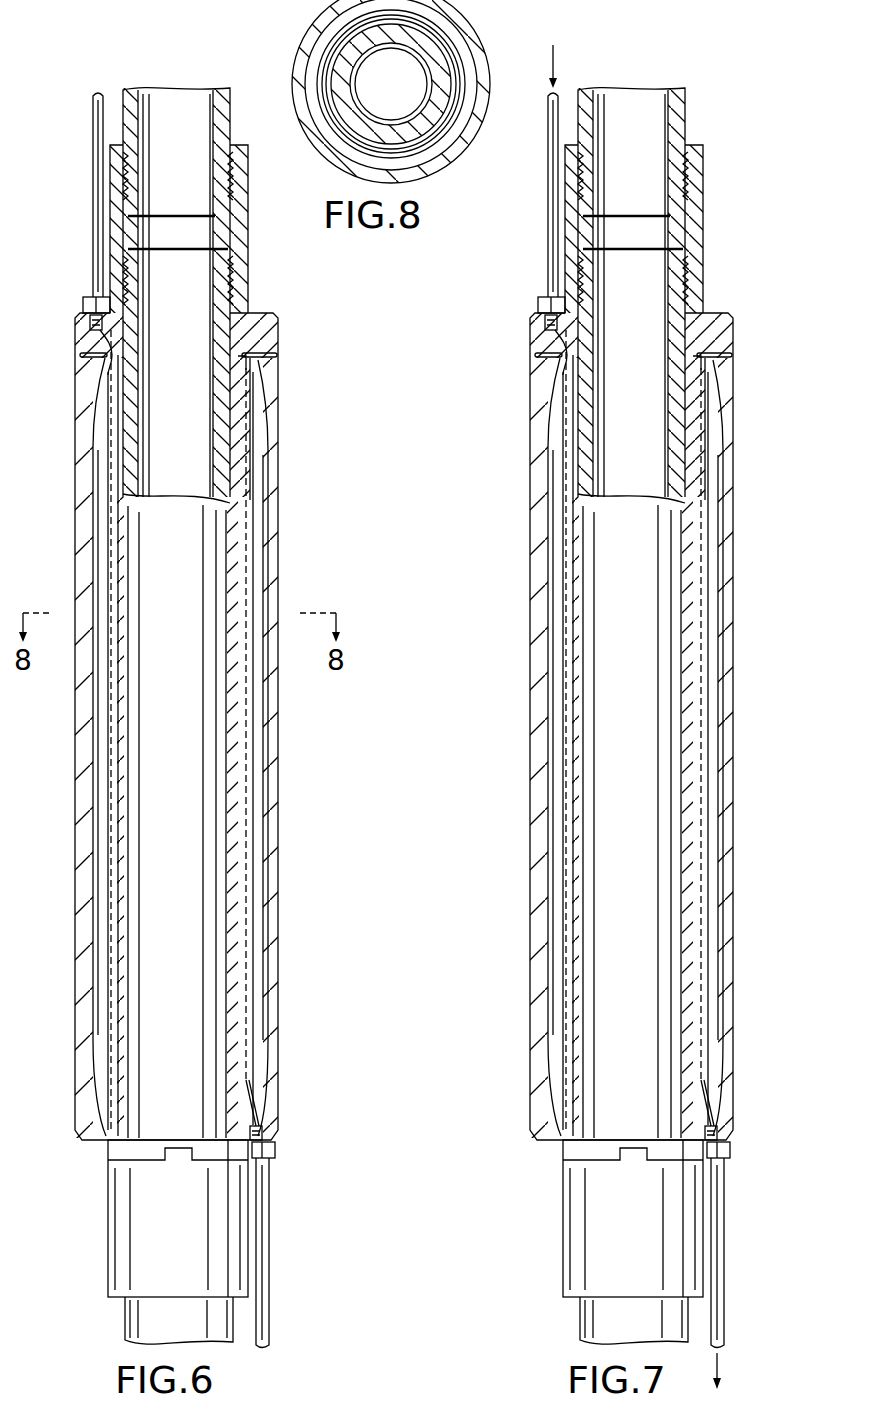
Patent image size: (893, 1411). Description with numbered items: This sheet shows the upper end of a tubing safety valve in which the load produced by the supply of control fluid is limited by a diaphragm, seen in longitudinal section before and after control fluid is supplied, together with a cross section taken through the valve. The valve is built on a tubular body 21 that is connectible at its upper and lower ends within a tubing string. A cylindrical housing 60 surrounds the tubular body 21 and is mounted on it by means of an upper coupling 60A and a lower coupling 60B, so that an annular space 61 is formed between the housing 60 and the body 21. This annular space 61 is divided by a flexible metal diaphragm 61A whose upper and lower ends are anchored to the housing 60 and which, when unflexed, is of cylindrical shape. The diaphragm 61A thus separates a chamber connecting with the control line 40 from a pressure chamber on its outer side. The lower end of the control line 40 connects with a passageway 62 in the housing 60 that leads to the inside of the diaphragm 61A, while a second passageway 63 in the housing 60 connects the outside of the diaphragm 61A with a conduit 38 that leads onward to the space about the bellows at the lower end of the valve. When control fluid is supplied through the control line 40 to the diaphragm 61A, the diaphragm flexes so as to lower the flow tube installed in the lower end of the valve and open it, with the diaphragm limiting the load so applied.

In FIG. 6, the tubular body 21 is at (158, 828).
In FIG. 7, the tubular body 21 is at (683, 433).
In FIG. 6, the conduit 38 is at (272, 1236).
In FIG. 6, the control line 40 is at (90, 180).
In FIG. 7, the cylindrical housing 60 is at (731, 642).
In FIG. 6, the coupling 60A is at (243, 228).
In FIG. 7, the coupling 60B is at (562, 1221).
In FIG. 6, the annular space 61 is at (255, 440).
In FIG. 7, the annular space 61 is at (698, 792).
In FIG. 6, the flexible metal diaphragm 61A is at (250, 812).
In FIG. 7, the flexible metal diaphragm 61A is at (722, 907).
In FIG. 6, the passageway 62 is at (82, 345).
In FIG. 6, the passageway 63 is at (257, 1100).